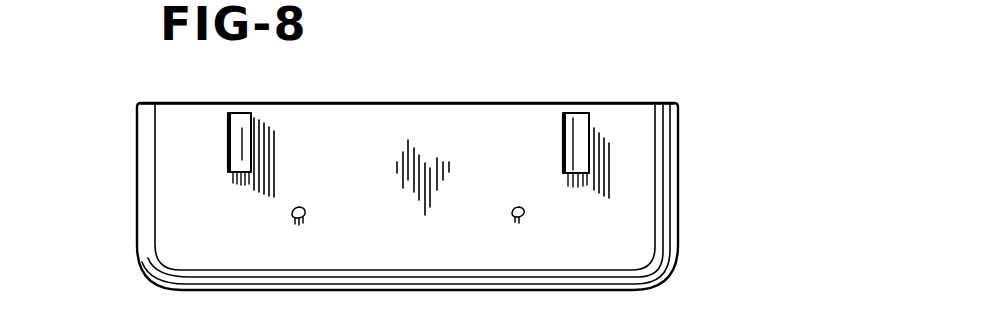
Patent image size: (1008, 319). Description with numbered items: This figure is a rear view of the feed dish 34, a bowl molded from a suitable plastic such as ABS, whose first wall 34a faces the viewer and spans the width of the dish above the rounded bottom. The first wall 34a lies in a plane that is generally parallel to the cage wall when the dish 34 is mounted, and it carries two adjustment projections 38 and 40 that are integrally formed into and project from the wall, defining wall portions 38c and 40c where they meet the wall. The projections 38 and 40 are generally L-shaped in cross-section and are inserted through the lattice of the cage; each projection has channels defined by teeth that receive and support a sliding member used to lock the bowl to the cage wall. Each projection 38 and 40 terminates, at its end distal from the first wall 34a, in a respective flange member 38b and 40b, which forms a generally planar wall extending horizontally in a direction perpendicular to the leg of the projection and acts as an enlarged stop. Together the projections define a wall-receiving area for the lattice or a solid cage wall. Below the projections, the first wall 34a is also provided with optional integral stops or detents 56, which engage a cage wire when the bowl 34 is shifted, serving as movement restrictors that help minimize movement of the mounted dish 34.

The feed dish 34 is at (137, 155).
The first wall 34a is at (408, 108).
The adjustment projection 38 is at (577, 113).
The flange member 38b is at (592, 126).
The wall portion 38c is at (562, 127).
The adjustment projection 40 is at (257, 153).
The flange member 40b is at (228, 133).
The wall portion 40c is at (257, 148).
The stop or detent 56 is at (306, 212).